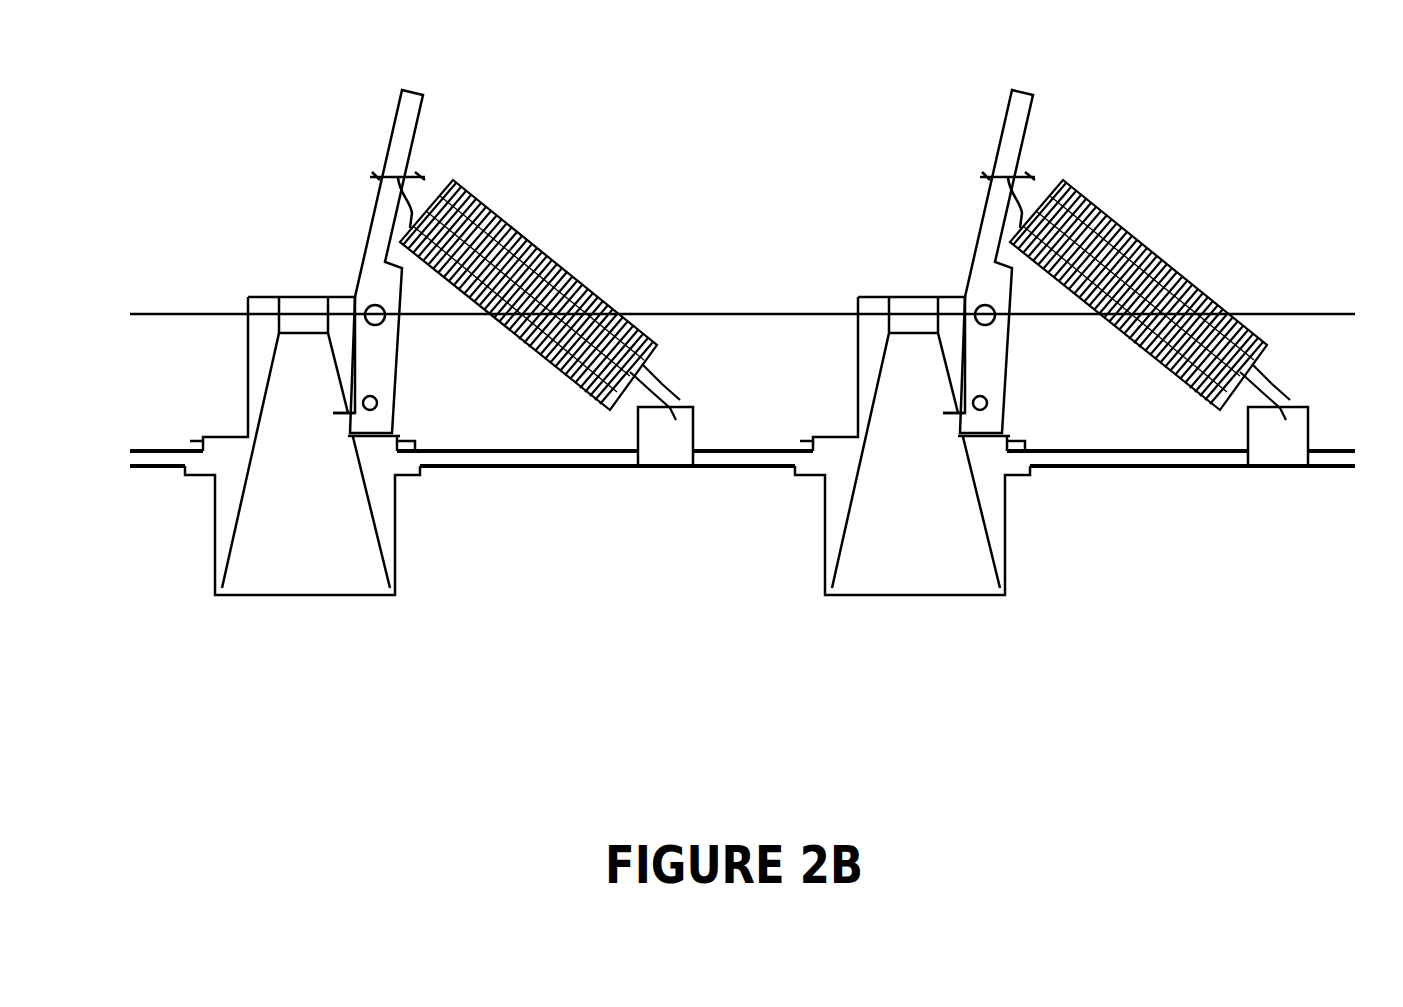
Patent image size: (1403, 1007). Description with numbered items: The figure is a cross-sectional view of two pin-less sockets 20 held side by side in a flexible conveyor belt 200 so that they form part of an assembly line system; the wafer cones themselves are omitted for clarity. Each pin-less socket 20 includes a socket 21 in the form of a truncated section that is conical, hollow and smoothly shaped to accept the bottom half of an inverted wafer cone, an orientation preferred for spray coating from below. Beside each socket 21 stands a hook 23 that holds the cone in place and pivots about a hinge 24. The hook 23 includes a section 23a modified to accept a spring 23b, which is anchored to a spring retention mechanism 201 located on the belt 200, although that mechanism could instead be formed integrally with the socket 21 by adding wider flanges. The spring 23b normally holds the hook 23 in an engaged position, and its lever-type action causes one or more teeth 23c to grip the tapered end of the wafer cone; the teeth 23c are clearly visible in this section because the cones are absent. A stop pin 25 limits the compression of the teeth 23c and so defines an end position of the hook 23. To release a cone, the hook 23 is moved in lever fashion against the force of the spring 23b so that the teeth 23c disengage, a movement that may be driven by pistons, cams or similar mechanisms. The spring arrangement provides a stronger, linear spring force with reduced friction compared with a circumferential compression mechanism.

The pin-less socket 20 is at (170, 222).
The socket 21 is at (400, 533).
The hook 23 is at (418, 130).
The section 23a is at (368, 223).
The spring 23b is at (573, 275).
The teeth 23c is at (333, 413).
The hinge 24 is at (380, 408).
The stop pin 25 is at (372, 337).
The flexible conveyor belt 200 is at (1112, 485).
The spring retention mechanism 201 is at (695, 435).